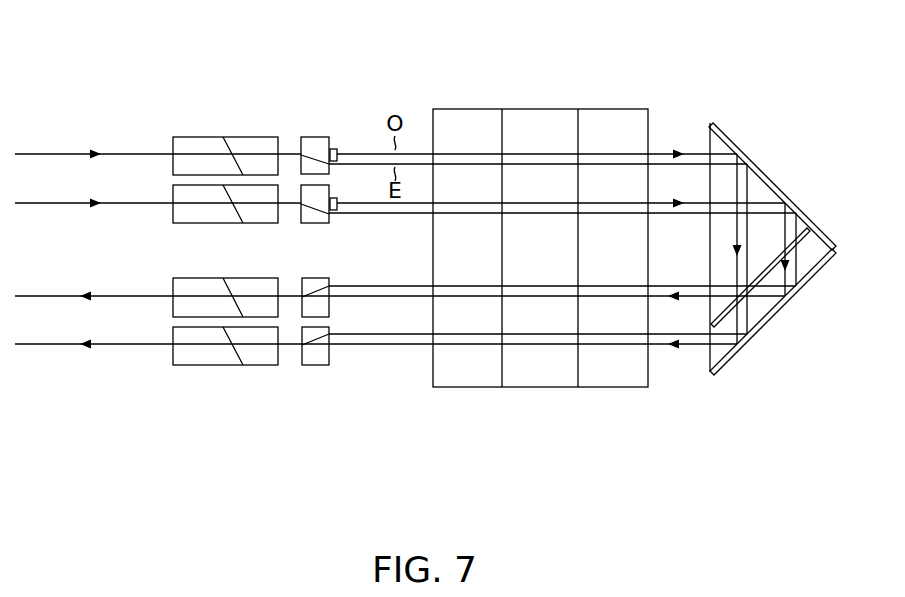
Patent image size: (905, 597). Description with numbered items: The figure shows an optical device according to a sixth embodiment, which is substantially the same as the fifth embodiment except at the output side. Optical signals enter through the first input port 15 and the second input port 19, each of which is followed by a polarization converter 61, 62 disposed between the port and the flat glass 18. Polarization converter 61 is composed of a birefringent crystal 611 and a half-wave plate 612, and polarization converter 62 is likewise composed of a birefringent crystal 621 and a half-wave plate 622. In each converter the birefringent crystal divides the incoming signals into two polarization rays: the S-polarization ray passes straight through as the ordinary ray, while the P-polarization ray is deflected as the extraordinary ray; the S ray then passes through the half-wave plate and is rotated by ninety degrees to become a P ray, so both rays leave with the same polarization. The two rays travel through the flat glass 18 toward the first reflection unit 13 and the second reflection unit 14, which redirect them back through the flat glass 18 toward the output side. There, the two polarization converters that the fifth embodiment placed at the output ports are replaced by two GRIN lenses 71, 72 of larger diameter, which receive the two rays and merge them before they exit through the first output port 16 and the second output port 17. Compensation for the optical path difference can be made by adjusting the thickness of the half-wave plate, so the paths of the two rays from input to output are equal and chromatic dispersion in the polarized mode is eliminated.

The first reflection unit 13 is at (803, 262).
The second reflection unit 14 is at (757, 188).
The first input port 15 is at (252, 147).
The first output port 16 is at (257, 357).
The second output port 17 is at (202, 308).
The flat glass 18 is at (472, 118).
The second input port 19 is at (197, 195).
The polarization converter 61 is at (336, 107).
The birefringent crystal 611 is at (315, 140).
The half-wave plate 612 is at (358, 123).
The polarization converter 62 is at (344, 235).
The birefringent crystal 621 is at (313, 222).
The half-wave plate 622 is at (337, 210).
The GRIN lens 71 is at (325, 307).
The GRIN lens 72 is at (325, 357).